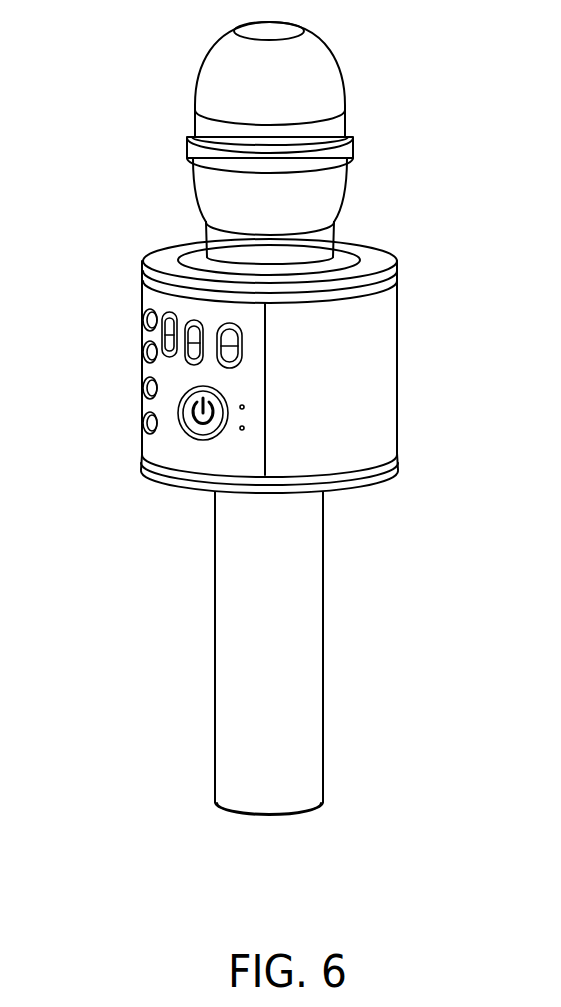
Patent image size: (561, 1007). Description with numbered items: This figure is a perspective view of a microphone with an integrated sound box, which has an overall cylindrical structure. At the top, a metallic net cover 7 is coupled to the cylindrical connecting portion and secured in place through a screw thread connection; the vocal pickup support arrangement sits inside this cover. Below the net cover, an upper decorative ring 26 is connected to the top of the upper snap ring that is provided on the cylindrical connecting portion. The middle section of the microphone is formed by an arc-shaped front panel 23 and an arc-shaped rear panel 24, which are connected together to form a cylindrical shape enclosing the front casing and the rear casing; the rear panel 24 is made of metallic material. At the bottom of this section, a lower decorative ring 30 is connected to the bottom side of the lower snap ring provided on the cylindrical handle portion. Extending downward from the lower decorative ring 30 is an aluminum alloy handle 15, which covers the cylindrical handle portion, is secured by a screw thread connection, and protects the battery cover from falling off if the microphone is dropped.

The metallic net cover 7 is at (300, 88).
The upper decorative ring 26 is at (163, 263).
The arc-shaped rear panel 24 is at (357, 408).
The arc-shaped front panel 23 is at (173, 443).
The lower decorative ring 30 is at (353, 485).
The aluminum alloy handle 15 is at (308, 655).